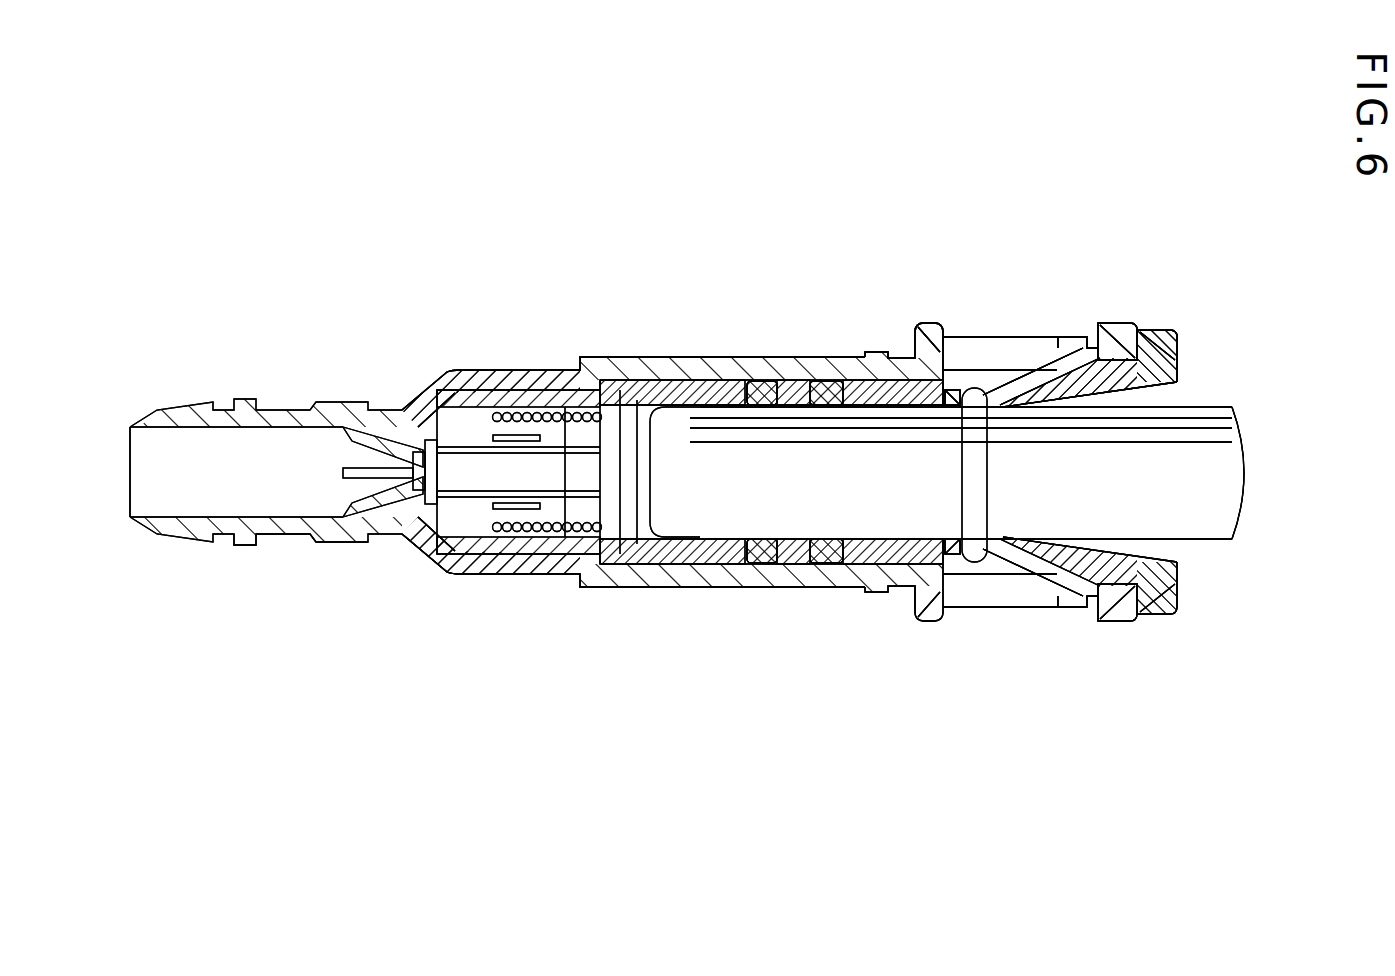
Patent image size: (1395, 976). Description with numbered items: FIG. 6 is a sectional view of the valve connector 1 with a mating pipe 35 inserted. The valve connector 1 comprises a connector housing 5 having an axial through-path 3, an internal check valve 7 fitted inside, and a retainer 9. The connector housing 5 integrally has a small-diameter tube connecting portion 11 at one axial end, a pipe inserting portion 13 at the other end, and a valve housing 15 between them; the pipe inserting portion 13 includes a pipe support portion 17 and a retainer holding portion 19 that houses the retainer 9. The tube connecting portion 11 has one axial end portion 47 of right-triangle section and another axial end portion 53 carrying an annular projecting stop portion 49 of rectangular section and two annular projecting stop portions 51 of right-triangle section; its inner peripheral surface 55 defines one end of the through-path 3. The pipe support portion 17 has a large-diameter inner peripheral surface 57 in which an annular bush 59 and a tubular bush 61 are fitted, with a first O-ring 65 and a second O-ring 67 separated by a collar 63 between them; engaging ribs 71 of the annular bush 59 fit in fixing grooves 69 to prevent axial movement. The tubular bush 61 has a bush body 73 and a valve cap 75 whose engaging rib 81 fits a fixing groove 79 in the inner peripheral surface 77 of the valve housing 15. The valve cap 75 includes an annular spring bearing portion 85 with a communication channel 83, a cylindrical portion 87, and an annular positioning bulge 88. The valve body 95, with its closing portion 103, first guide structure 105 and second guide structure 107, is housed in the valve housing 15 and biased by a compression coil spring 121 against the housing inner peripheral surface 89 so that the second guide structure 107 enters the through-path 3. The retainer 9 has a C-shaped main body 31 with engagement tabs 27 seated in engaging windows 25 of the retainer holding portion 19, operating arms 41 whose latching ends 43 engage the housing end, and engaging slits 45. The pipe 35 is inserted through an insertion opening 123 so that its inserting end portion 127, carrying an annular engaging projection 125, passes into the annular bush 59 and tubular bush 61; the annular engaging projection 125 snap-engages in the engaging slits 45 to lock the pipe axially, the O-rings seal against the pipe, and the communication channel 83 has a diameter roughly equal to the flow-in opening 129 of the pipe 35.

The valve connector 1 is at (399, 342).
The through-path 3 is at (170, 488).
The connector housing 5 is at (700, 318).
The internal check valve 7 is at (508, 388).
The retainer 9 is at (1210, 338).
The tube connecting portion 11 is at (263, 360).
The pipe inserting portion 13 is at (898, 305).
The valve housing 15 is at (484, 370).
The pipe support portion 17 is at (737, 357).
The retainer holding portion 19 is at (1108, 330).
The engaging windows 25 is at (1008, 595).
The engagement tabs 27 is at (1073, 604).
The main body 31 is at (1028, 580).
The pipe 35 is at (1222, 392).
The operating arms 41 is at (1107, 615).
The latching end 43 is at (1157, 612).
The engaging slits 45 is at (978, 570).
The one axial end portion 47 is at (200, 398).
The annular projecting stop portion 49 is at (233, 548).
The annular projecting stop portions 51 is at (357, 545).
The other axial end portion 53 is at (340, 370).
The inner peripheral surface 55 is at (130, 430).
The inner peripheral surface 57 is at (845, 357).
The annular bush 59 is at (858, 357).
The tubular bush 61 is at (641, 357).
The collar 63 is at (800, 570).
The first O-ring 65 is at (823, 573).
The second O-ring 67 is at (753, 560).
The fixing grooves 69 is at (940, 593).
The engaging ribs 71 is at (942, 358).
The bush body 73 is at (700, 585).
The valve cap 75 is at (571, 560).
The inner peripheral surface 77 is at (540, 565).
The fixing groove 79 is at (628, 580).
The engaging rib 81 is at (607, 393).
The communication channel 83 is at (593, 452).
The spring bearing portion 85 is at (615, 528).
The cylindrical portion 87 is at (582, 400).
The annular positioning bulge 88 is at (624, 503).
The housing inner peripheral surface 89 is at (450, 380).
The valve body 95 is at (347, 501).
The closing portion 103 is at (413, 548).
The first guide structure 105 is at (463, 578).
The second guide structure 107 is at (325, 454).
The compression coil spring 121 is at (545, 388).
The insertion opening 123 is at (1170, 560).
The annular engaging projection 125 is at (975, 497).
The inserting end portion 127 is at (880, 473).
The flow-in opening 129 is at (700, 459).